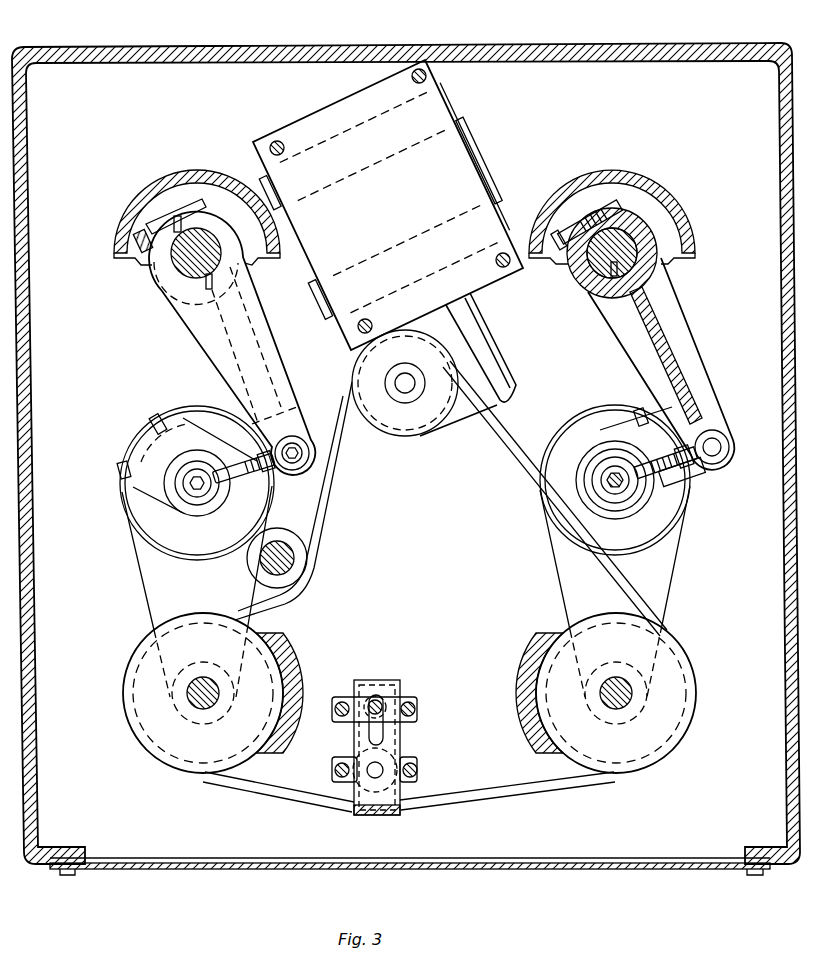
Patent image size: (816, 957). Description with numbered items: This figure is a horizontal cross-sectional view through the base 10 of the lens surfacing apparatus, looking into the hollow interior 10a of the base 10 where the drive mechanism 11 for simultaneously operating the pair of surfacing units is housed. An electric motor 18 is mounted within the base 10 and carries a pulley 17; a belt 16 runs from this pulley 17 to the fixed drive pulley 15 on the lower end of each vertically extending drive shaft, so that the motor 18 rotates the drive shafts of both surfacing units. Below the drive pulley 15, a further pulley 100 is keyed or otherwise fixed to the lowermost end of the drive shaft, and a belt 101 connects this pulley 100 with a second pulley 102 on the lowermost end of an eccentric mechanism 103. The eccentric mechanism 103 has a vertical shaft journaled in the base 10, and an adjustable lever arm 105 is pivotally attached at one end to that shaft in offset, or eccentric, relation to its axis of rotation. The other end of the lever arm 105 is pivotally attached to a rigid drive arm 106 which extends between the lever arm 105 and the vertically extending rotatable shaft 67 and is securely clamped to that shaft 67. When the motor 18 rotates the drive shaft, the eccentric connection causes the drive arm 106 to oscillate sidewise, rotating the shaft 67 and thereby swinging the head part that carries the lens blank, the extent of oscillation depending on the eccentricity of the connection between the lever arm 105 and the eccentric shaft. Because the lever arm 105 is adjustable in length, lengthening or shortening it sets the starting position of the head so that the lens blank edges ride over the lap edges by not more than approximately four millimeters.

The base 10 is at (263, 46).
The hollow interior 10a is at (577, 840).
The drive mechanism 11 is at (123, 655).
The drive pulley 15 is at (171, 765).
The belt 16 is at (627, 578).
The pulley 17 is at (414, 432).
The electric motor 18 is at (445, 95).
The rotatable shaft 67 is at (183, 263).
The pulley 100 is at (138, 732).
The belt 101 is at (143, 597).
The second pulley 102 is at (140, 512).
The eccentric mechanism 103 is at (568, 488).
The adjustable lever arm 105 is at (260, 480).
The rigid drive arm 106 is at (202, 322).